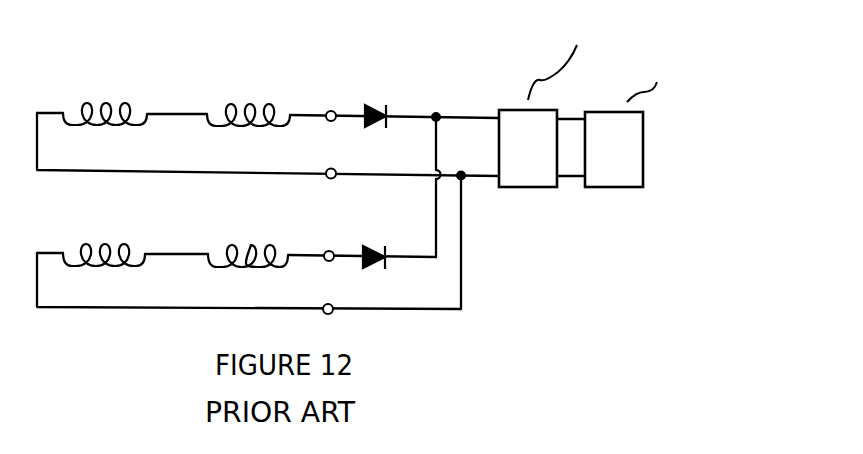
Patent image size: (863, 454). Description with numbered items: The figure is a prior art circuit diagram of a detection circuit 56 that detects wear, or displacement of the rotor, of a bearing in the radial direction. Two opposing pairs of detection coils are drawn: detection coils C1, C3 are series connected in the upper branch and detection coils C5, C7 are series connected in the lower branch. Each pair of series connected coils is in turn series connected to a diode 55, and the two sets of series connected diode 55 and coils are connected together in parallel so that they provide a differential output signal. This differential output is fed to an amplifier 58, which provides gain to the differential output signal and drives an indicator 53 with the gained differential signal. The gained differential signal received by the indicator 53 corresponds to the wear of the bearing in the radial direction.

The detection coil C1 is at (104, 102).
The detection coil C3 is at (256, 103).
The detection coil C5 is at (102, 244).
The detection coil C7 is at (247, 245).
The diode 55 is at (368, 104).
The detection circuit 56 is at (444, 101).
The amplifier 58 is at (530, 188).
The indicator 53 is at (612, 188).